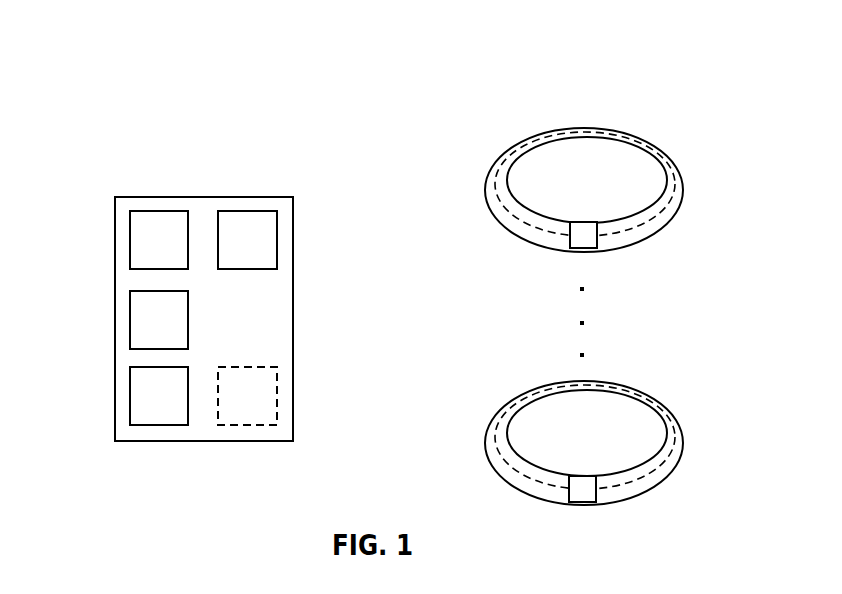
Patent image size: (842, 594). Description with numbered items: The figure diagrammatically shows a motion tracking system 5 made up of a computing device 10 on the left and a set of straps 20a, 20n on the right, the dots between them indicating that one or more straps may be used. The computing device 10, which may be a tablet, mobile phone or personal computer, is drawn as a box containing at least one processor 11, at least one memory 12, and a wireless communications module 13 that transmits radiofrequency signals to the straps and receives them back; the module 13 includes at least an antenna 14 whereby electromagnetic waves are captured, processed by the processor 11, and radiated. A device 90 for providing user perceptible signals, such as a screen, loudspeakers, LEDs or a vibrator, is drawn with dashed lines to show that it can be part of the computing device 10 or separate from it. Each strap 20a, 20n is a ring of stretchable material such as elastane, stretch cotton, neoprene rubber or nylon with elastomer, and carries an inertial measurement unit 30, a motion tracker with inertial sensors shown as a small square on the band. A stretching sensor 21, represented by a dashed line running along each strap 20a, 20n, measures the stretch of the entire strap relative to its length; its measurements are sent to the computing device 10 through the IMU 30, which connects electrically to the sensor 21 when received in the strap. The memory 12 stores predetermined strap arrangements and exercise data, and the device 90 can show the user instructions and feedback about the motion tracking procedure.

The motion tracking system 5 is at (388, 96).
The computing device 10 is at (205, 212).
The processor 11 is at (145, 243).
The memory 12 is at (145, 323).
The wireless communications module 13 is at (145, 402).
The antenna 14 is at (260, 240).
The device for providing user perceptible signals 90 is at (262, 402).
The strap 20a is at (692, 150).
The strap 20n is at (691, 403).
The stretching sensor 21 is at (613, 233).
The inertial measurement unit 30 is at (580, 237).